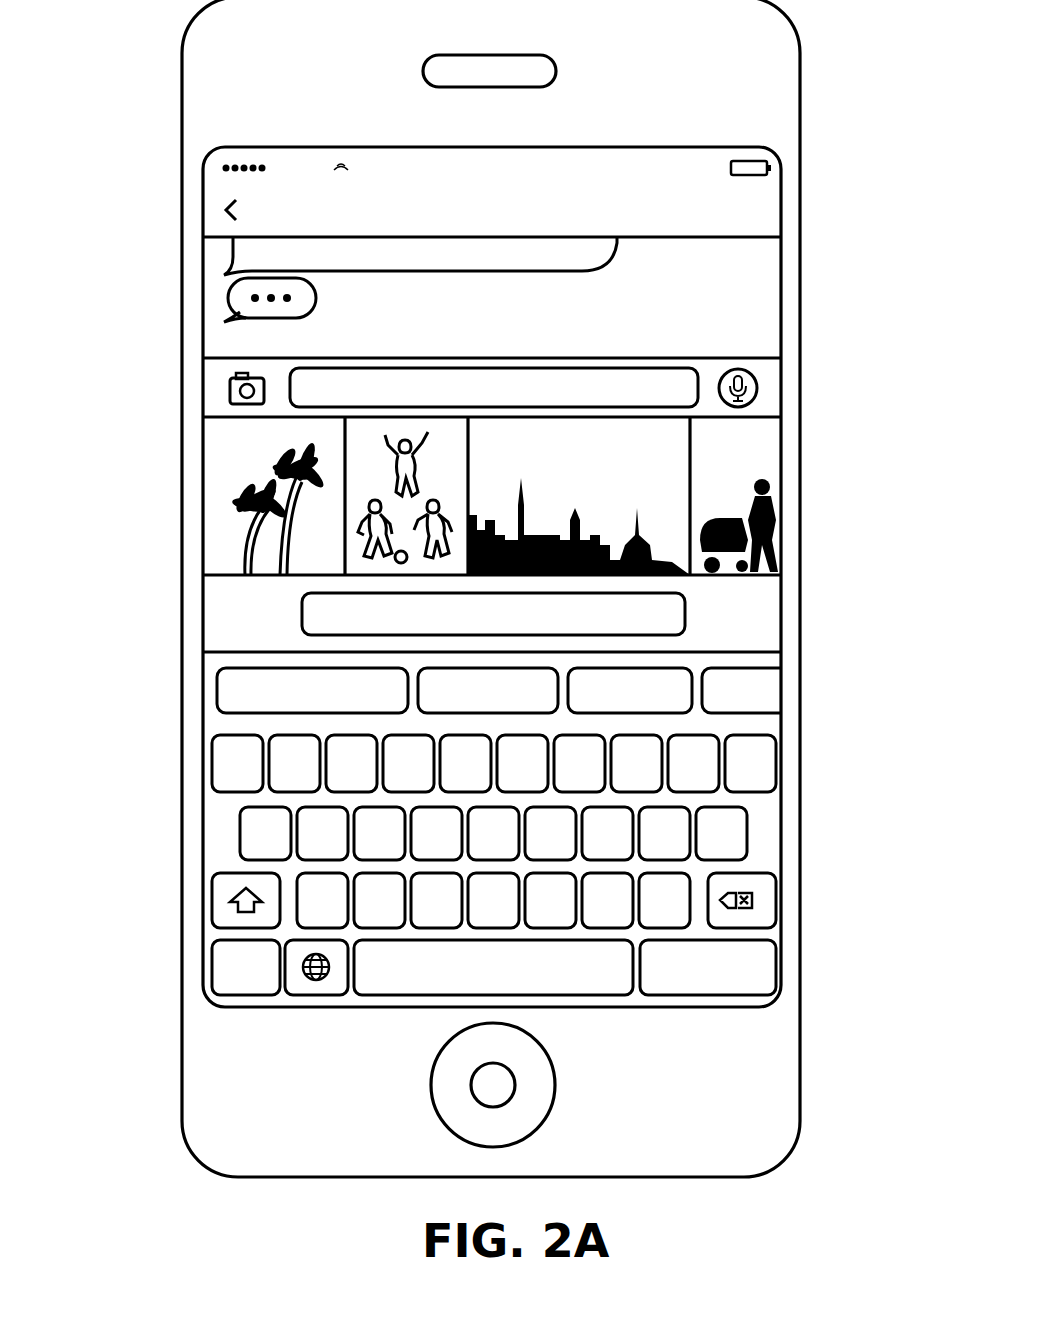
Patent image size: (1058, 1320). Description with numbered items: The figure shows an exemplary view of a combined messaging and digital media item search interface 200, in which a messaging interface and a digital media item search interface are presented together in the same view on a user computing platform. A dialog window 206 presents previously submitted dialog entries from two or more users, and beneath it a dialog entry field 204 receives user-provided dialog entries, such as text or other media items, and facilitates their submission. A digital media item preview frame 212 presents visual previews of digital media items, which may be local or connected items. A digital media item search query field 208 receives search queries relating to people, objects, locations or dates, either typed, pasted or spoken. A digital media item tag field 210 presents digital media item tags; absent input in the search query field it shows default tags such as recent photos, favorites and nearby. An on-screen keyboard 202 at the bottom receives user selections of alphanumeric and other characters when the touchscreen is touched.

The combined messaging and digital media item search interface 200 is at (156, 271).
The on-screen keyboard 202 is at (800, 722).
The dialog entry field 204 is at (800, 360).
The dialog window 206 is at (800, 240).
The digital media item search query field 208 is at (800, 577).
The digital media item tag field 210 is at (800, 654).
The digital media item preview frame 212 is at (800, 419).